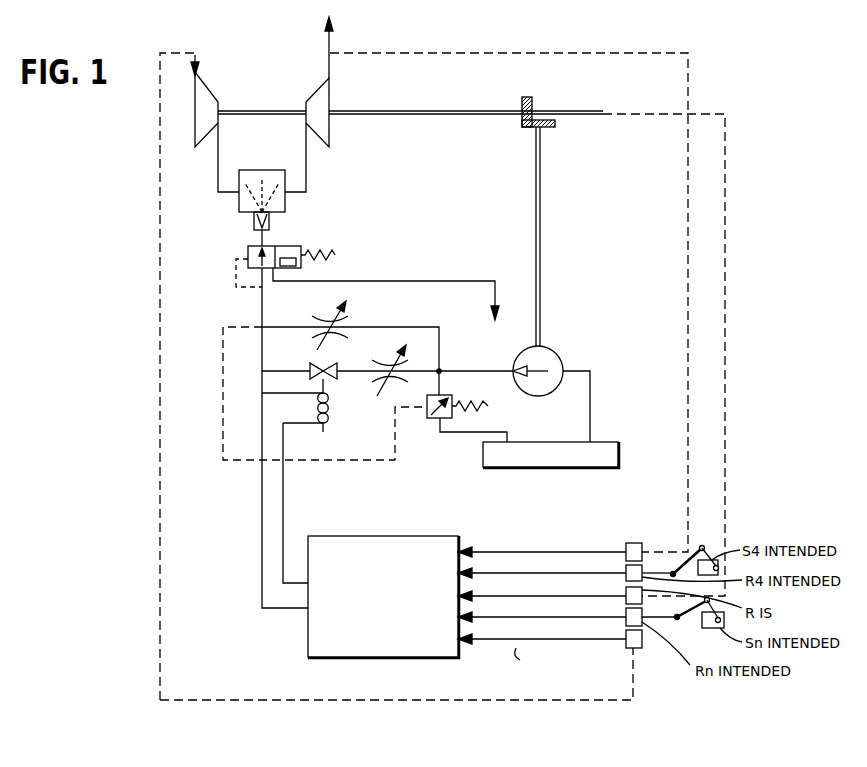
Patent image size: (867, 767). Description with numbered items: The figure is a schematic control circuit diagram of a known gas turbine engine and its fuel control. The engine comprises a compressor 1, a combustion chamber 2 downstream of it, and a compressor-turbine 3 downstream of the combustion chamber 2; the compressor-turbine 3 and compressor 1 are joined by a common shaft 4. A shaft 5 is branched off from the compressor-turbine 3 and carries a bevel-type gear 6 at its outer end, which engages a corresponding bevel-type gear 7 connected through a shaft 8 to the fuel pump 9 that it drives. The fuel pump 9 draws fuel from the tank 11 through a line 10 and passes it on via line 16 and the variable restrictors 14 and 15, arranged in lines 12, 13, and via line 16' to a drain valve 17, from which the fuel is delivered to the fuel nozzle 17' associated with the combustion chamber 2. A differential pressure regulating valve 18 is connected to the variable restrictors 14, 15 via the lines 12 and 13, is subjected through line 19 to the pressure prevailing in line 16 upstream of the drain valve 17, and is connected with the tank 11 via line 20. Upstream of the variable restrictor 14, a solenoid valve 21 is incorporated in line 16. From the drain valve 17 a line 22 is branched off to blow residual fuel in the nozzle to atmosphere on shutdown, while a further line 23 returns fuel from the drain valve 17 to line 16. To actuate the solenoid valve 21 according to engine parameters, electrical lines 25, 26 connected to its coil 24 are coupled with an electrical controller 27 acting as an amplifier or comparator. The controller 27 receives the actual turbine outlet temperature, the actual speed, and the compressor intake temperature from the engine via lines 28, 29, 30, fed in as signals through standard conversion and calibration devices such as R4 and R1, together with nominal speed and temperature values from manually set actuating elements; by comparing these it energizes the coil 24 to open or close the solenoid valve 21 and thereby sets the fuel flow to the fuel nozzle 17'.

The compressor 1 is at (207, 88).
The combustion chamber 2 is at (272, 162).
The compressor-turbine 3 is at (330, 130).
The common shaft 4 is at (262, 108).
The shaft 5 is at (416, 108).
The bevel-type gear 6 is at (530, 100).
The bevel-type gear 7 is at (555, 126).
The shaft 8 is at (540, 258).
The fuel pump 9 is at (563, 356).
The line 10 is at (590, 392).
The tank 11 is at (570, 468).
The line 12 is at (439, 368).
The line 13 is at (418, 327).
The variable restrictor 14 is at (378, 362).
The variable restrictor 15 is at (348, 312).
The line 16 is at (264, 319).
The line 16' is at (233, 237).
The drain valve 17 is at (293, 245).
The fuel nozzle 17' is at (292, 216).
The differential pressure regulating valve 18 is at (433, 418).
The line 19 is at (223, 376).
The line 20 is at (493, 432).
The solenoid valve 21 is at (336, 383).
The line 22 is at (402, 281).
The line 23 is at (236, 270).
The coil 24 is at (323, 426).
The electrical line 25 is at (262, 526).
The electrical line 26 is at (283, 502).
The electrical controller 27 is at (395, 658).
The line 28 is at (470, 45).
The line 29 is at (725, 265).
The line 30 is at (418, 702).
The conversion and calibration device R4 is at (630, 543).
The conversion and calibration device R1 is at (638, 648).